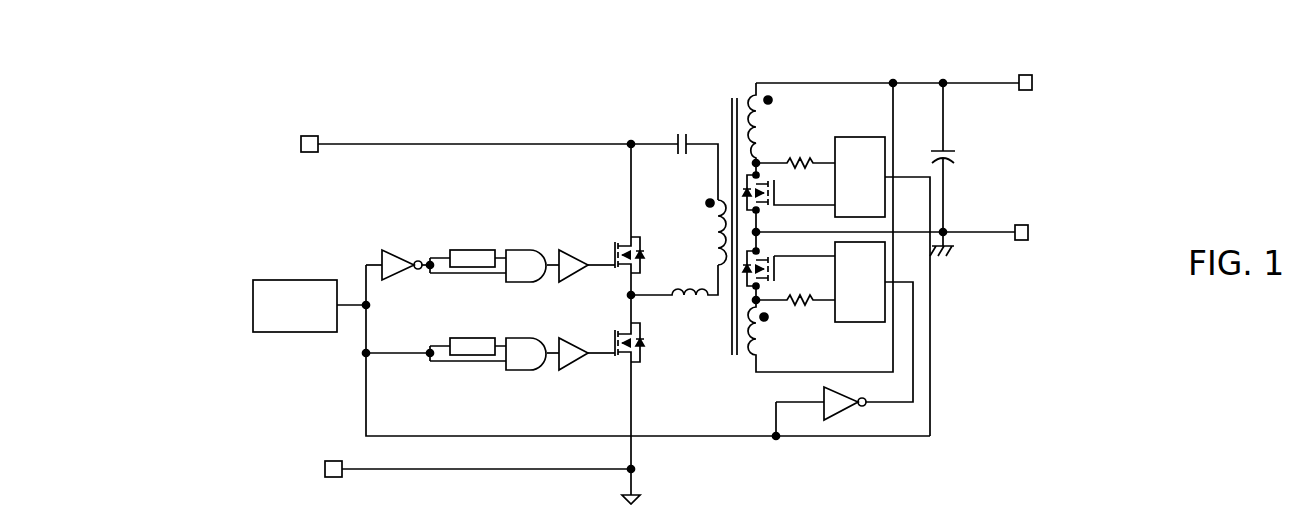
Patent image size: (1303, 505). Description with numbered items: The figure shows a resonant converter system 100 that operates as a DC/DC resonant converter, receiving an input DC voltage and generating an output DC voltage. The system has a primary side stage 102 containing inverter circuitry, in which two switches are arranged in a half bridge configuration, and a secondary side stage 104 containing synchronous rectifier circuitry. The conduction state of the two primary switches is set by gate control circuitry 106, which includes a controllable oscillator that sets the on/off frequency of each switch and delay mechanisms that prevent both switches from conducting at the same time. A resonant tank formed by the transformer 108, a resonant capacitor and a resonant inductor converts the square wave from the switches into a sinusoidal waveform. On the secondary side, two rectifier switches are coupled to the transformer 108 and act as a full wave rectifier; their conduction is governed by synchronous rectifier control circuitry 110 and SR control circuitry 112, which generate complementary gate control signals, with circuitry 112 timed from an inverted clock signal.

The resonant converter system 100 is at (554, 86).
The primary side stage 102 is at (326, 238).
The secondary side stage 104 is at (964, 341).
The gate control circuitry 106 is at (476, 235).
The transformer 108 is at (726, 120).
The synchronous rectifier control circuitry 110 is at (861, 137).
The SR control circuitry 112 is at (880, 322).